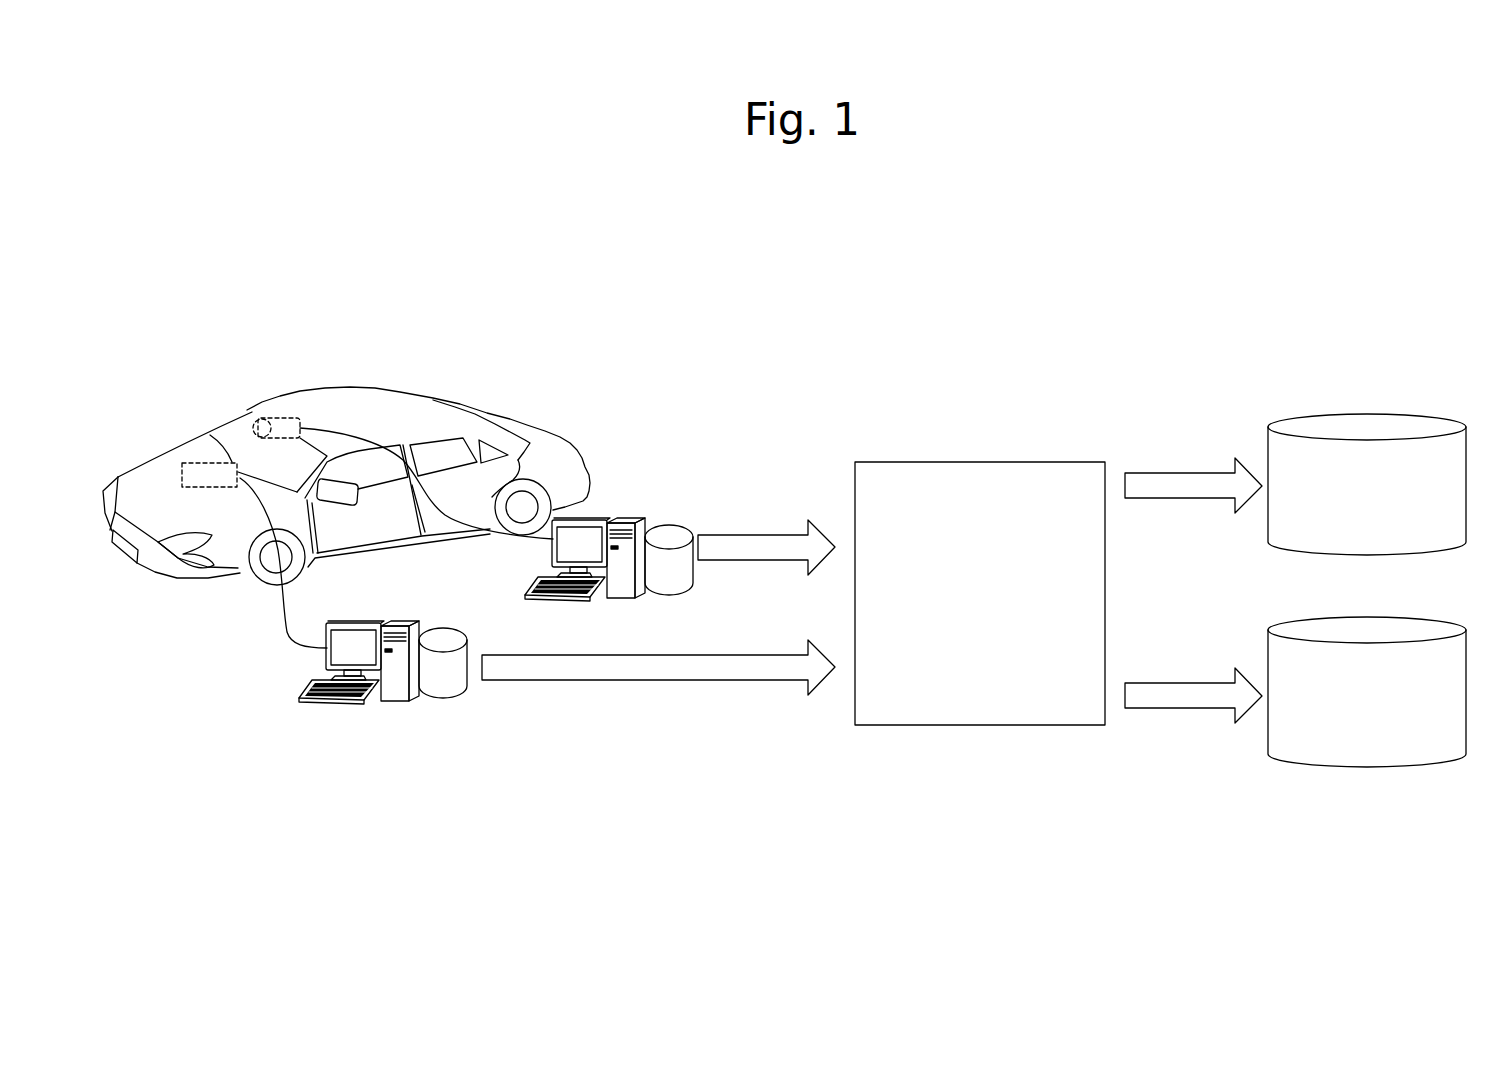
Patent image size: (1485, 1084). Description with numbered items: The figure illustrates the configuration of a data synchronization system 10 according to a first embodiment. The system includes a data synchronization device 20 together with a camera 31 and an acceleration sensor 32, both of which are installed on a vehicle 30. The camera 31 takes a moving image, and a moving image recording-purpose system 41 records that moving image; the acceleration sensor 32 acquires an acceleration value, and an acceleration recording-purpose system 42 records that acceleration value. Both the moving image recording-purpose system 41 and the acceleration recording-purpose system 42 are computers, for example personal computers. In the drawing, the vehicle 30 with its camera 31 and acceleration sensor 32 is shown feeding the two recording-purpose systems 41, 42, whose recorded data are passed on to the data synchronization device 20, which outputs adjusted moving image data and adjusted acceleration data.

The data synchronization system 10 is at (1116, 434).
The data synchronization device 20 is at (987, 462).
The vehicle 30 is at (540, 429).
The camera 31 is at (268, 417).
The acceleration sensor 32 is at (190, 463).
The moving image recording-purpose system 41 is at (642, 515).
The acceleration recording-purpose system 42 is at (390, 700).